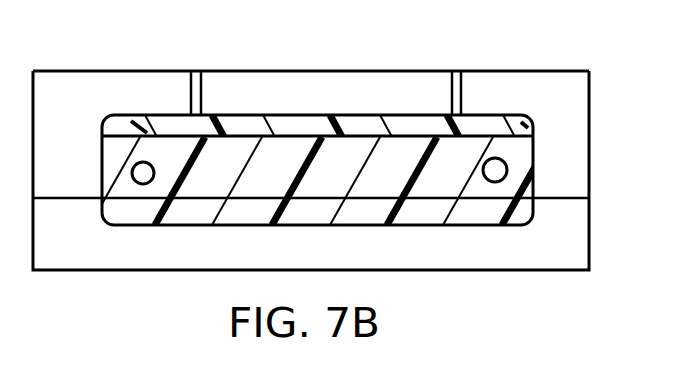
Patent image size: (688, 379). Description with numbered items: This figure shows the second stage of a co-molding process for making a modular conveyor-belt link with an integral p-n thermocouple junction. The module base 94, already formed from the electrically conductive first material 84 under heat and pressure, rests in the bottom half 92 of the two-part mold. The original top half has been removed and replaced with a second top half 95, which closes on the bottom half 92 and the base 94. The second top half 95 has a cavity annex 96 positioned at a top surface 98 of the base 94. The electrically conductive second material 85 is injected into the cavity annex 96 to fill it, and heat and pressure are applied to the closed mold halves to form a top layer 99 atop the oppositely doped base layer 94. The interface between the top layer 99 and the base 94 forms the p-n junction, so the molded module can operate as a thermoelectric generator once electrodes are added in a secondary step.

The electrically conductive first material 84 is at (138, 213).
The electrically conductive second material 85 is at (287, 128).
The bottom half 92 is at (561, 260).
The module base 94 is at (433, 210).
The second top half 95 is at (540, 76).
The cavity annex 96 is at (133, 122).
The top surface 98 is at (358, 135).
The top layer 99 is at (525, 125).